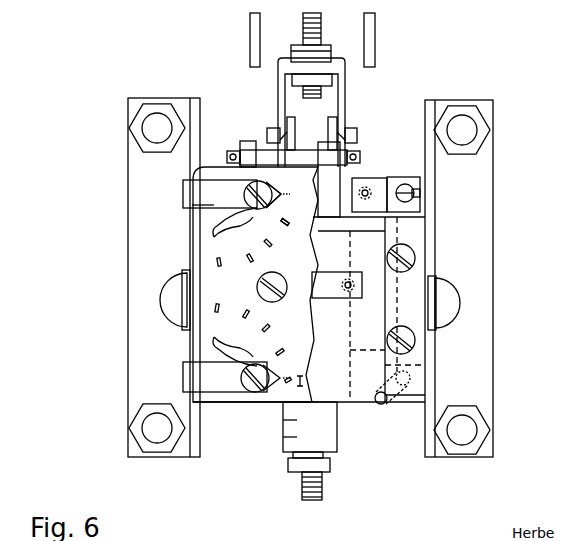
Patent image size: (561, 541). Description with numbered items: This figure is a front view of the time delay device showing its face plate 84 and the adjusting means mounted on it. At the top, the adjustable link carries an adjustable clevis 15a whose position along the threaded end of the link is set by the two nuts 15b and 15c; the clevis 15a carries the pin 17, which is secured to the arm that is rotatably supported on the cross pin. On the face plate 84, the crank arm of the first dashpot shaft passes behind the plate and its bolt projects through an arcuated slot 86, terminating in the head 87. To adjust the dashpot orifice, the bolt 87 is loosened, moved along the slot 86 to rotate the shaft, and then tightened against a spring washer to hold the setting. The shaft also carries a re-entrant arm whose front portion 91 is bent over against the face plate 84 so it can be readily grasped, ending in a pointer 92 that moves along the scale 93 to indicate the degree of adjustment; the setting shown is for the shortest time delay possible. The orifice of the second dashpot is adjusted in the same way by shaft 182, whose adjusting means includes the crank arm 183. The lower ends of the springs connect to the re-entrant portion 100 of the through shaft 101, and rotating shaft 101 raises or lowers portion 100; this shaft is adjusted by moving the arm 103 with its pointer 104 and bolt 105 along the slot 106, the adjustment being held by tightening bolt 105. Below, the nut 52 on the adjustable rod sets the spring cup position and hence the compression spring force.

The adjustable clevis 15a is at (340, 77).
The nut 15b is at (318, 52).
The nut 15c is at (320, 78).
The pin 17 is at (272, 130).
The nut 52 is at (323, 463).
The face plate 84 is at (193, 250).
The arcuated slot 86 is at (217, 232).
The bolt head 87 is at (250, 193).
The front portion of re-entrant arm 91 is at (220, 194).
The pointer 92 is at (270, 183).
The scale 93 is at (285, 229).
The re-entrant portion of through shaft 100 is at (380, 401).
The through shaft 101 is at (403, 378).
The arm 103 is at (197, 381).
The pointer 104 is at (275, 386).
The bolt 105 is at (248, 388).
The slot 106 is at (215, 341).
The shaft 182 is at (411, 194).
The crank arm 183 is at (378, 192).